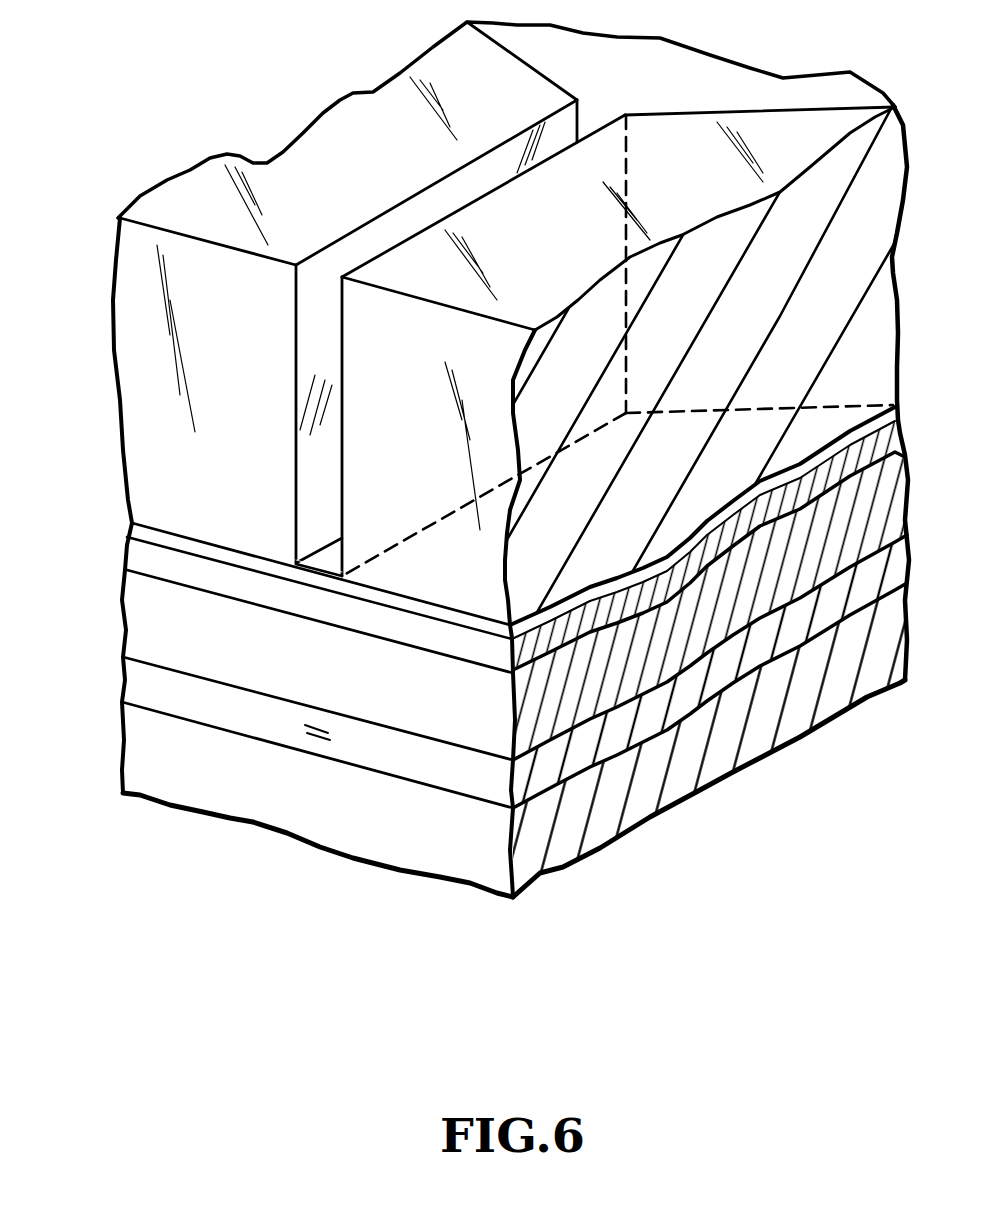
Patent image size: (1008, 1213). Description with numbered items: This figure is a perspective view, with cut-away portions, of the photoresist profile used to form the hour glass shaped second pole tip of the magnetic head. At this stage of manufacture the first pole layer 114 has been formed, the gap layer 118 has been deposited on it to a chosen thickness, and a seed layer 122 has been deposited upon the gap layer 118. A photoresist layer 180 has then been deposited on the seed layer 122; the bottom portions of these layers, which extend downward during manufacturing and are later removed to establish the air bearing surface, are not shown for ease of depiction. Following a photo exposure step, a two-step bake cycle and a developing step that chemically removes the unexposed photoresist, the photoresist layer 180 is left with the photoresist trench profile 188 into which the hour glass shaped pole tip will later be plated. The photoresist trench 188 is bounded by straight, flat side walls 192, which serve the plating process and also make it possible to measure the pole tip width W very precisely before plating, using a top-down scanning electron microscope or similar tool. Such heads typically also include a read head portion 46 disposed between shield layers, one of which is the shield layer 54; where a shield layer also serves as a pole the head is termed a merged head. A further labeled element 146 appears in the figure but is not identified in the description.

The photoresist trench 188 is at (622, 84).
The side walls 192 is at (374, 238).
The photoresist layer 180 is at (113, 352).
The pole tip track region 146 is at (314, 578).
The pole tip width W is at (257, 548).
The seed layer 122 is at (132, 522).
The gap layer 118 is at (130, 540).
The P1 pole layer 114 is at (120, 588).
The read head portion 46 is at (306, 729).
The shield layer 54 is at (120, 740).